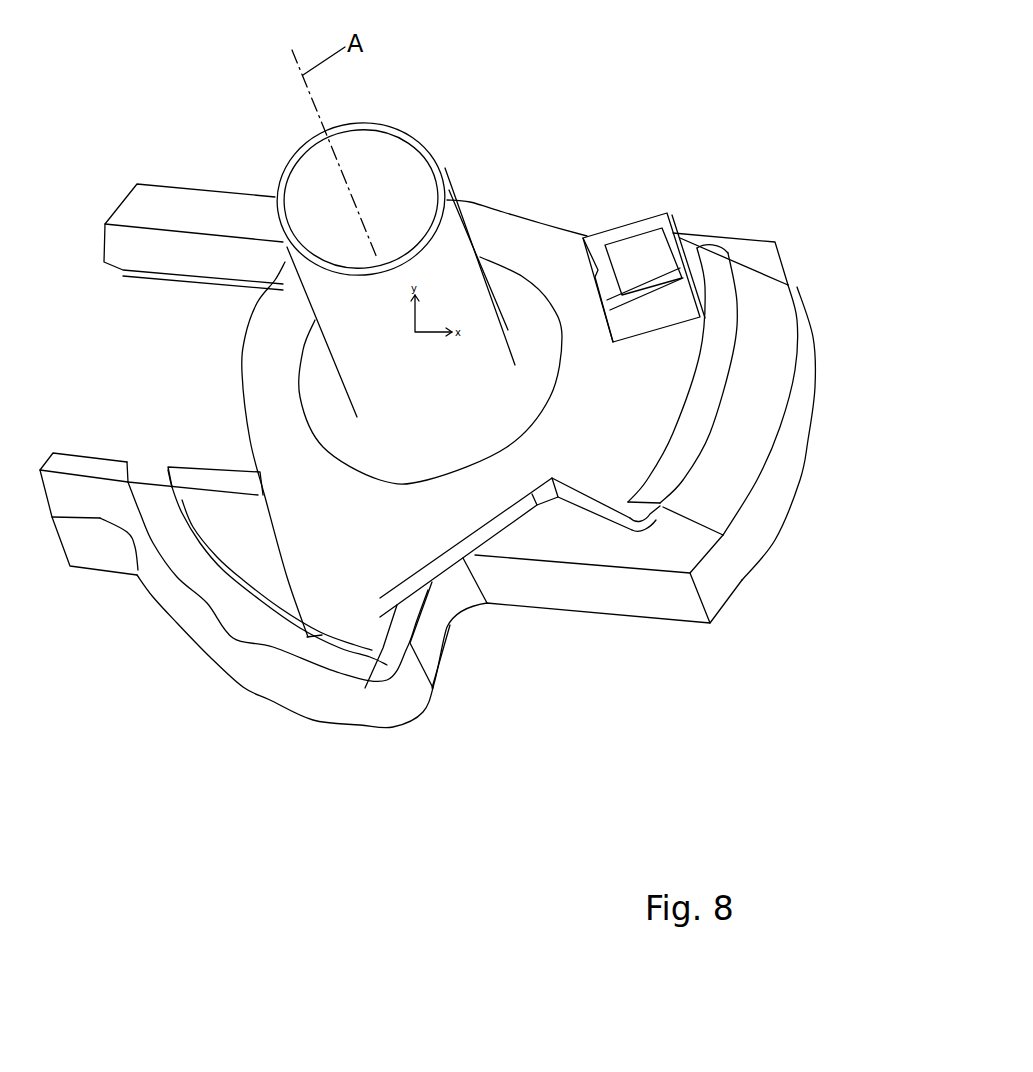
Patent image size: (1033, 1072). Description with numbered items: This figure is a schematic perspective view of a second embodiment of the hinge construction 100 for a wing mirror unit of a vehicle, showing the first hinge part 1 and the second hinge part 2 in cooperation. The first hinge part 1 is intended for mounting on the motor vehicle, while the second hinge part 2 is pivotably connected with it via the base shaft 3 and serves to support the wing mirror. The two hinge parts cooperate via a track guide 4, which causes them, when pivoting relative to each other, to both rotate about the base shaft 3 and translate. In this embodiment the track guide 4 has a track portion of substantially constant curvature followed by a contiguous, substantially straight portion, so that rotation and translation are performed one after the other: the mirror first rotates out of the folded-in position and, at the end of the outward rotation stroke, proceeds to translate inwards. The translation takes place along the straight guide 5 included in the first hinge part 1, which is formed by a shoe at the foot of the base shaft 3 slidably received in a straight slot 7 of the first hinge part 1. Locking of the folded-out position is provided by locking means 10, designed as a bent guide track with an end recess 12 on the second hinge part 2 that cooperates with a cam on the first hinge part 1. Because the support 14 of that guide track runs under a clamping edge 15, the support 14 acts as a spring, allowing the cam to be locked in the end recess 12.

The first hinge part 1 is at (667, 597).
The second hinge part 2 is at (508, 232).
The base shaft 3 is at (417, 138).
The track guide 4 is at (268, 618).
The straight guide 5 is at (253, 265).
The straight slot 7 is at (172, 267).
The locking means 10 is at (733, 215).
The end recess 12 is at (646, 258).
The support 14 is at (605, 487).
The clamping edge 15 is at (652, 492).
The hinge construction 100 is at (581, 62).